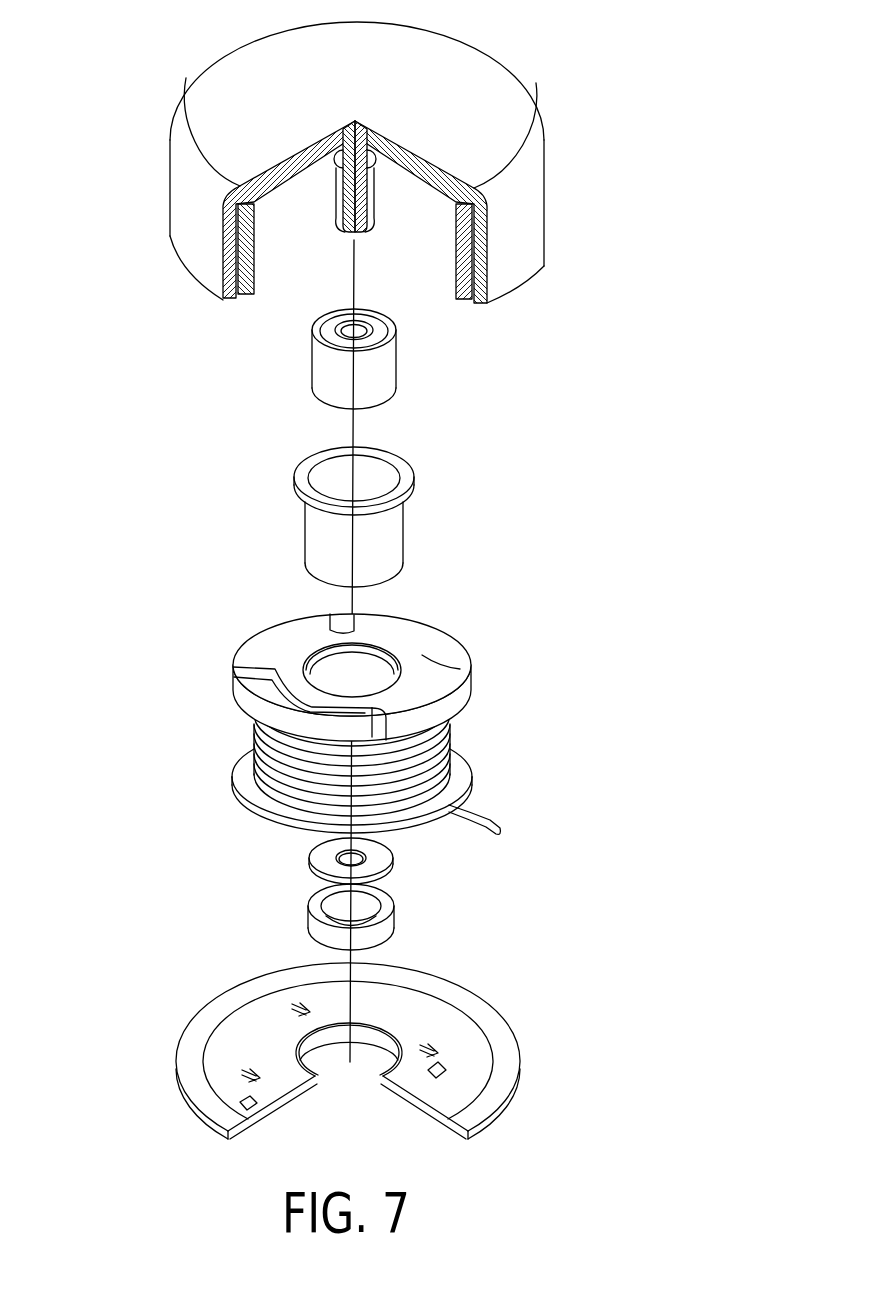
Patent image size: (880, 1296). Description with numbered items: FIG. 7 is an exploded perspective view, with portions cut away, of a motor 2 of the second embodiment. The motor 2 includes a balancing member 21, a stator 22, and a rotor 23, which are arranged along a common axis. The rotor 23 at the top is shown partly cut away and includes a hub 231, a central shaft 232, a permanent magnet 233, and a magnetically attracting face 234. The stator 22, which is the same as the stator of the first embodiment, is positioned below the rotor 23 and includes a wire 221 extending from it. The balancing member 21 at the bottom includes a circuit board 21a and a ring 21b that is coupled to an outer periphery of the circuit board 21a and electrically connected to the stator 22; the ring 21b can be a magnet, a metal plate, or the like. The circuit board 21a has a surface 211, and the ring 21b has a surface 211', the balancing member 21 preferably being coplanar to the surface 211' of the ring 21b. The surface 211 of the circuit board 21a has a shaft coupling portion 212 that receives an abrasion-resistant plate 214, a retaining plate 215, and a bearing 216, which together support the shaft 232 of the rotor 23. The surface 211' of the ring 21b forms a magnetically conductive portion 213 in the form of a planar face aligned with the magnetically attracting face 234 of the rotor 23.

The motor 2 is at (140, 115).
The rotor 23 is at (487, 72).
The hub 231 is at (510, 262).
The shaft 232 is at (372, 198).
The permanent magnet 233 is at (245, 248).
The magnetically attracting face 234 is at (240, 292).
The bearing 216 is at (388, 370).
The shaft coupling portion 212 is at (396, 538).
The stator 22 is at (455, 685).
The wire 221 is at (490, 822).
The retaining plate 215 is at (385, 853).
The abrasion-resistant plate 214 is at (385, 930).
The balancing member 21 is at (613, 987).
The circuit board 21a is at (470, 1048).
The ring 21b is at (503, 1060).
The surface 211 is at (336, 1000).
The surface 211' is at (161, 1059).
The magnetically conductive portion 213 is at (196, 1032).